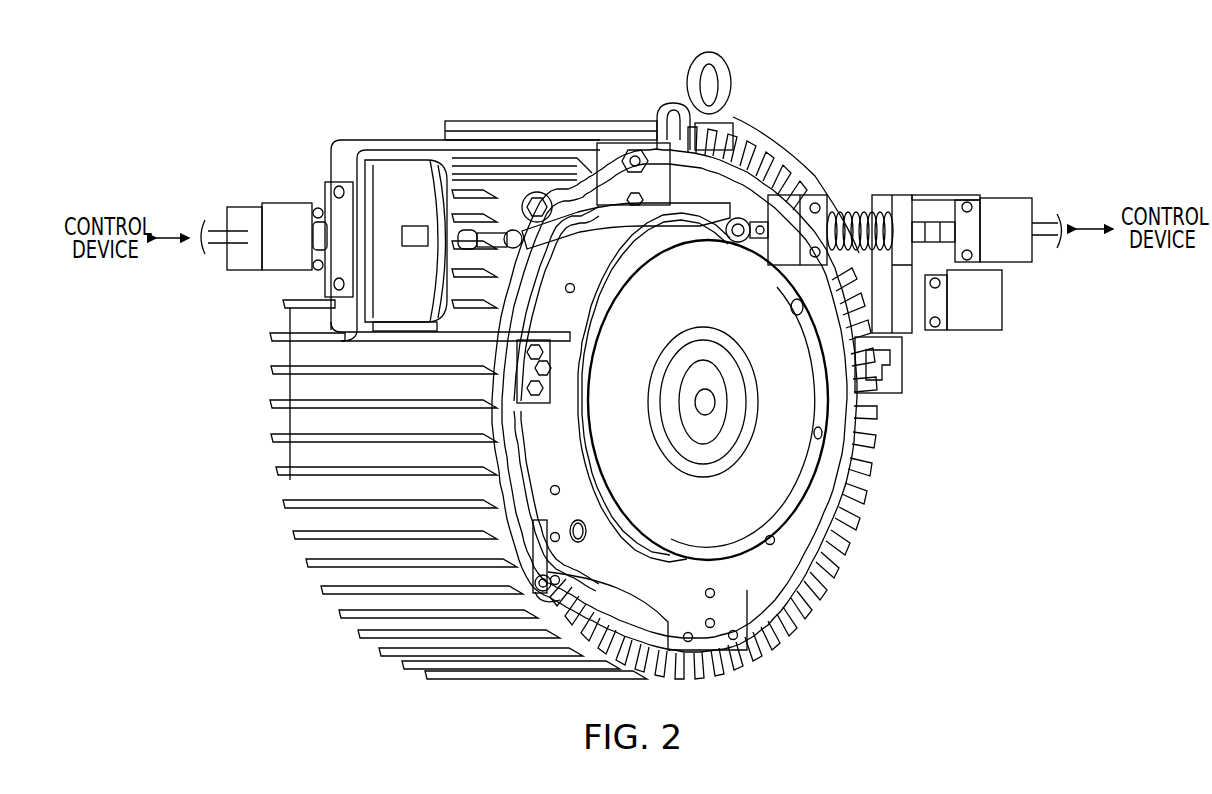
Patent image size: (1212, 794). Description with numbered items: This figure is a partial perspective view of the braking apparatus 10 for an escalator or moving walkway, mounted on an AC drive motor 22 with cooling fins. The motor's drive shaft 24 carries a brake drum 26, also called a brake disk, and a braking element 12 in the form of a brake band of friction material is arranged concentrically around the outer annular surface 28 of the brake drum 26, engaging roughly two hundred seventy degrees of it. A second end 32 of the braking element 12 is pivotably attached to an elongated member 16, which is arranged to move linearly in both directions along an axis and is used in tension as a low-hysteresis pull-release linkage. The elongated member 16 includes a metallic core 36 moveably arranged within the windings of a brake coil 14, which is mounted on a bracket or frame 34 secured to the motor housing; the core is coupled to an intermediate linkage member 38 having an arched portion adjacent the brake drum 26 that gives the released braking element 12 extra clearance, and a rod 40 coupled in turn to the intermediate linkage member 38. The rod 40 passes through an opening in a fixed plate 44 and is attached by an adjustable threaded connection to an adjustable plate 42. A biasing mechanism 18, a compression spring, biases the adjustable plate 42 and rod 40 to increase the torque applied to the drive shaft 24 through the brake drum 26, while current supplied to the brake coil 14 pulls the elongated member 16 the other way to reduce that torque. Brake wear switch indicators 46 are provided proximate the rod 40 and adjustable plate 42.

The braking apparatus 10 is at (652, 131).
The braking element 12 is at (674, 400).
The brake coil 14 is at (406, 217).
The elongated member 16 is at (594, 261).
The biasing mechanism 18 is at (860, 201).
The AC drive motor 22 is at (563, 403).
The drive shaft 24 is at (721, 402).
The brake drum 26 is at (740, 400).
The outer annular surface 28 is at (655, 387).
The second end 32 is at (734, 255).
The bracket or frame 34 is at (491, 248).
The metallic core 36 is at (429, 253).
The intermediate linkage member 38 is at (678, 327).
The end linkage member or rod 40 is at (791, 257).
The adjustable plate 42 is at (894, 294).
The fixed plate 44 is at (789, 185).
The brake wear switch indicator 46 is at (1000, 301).